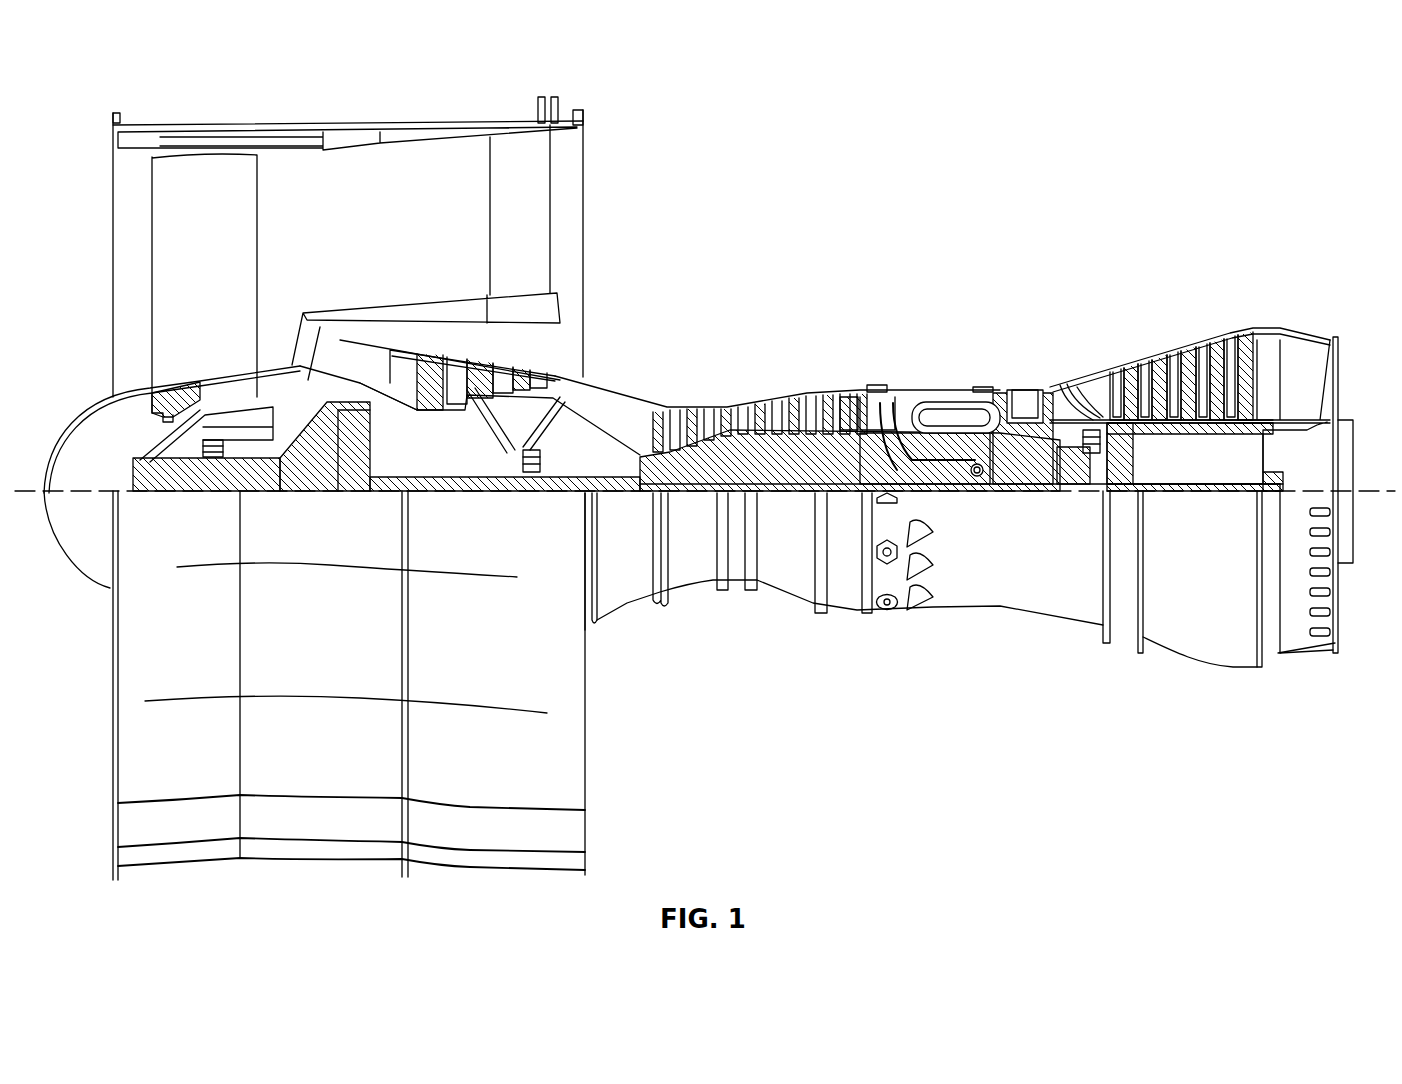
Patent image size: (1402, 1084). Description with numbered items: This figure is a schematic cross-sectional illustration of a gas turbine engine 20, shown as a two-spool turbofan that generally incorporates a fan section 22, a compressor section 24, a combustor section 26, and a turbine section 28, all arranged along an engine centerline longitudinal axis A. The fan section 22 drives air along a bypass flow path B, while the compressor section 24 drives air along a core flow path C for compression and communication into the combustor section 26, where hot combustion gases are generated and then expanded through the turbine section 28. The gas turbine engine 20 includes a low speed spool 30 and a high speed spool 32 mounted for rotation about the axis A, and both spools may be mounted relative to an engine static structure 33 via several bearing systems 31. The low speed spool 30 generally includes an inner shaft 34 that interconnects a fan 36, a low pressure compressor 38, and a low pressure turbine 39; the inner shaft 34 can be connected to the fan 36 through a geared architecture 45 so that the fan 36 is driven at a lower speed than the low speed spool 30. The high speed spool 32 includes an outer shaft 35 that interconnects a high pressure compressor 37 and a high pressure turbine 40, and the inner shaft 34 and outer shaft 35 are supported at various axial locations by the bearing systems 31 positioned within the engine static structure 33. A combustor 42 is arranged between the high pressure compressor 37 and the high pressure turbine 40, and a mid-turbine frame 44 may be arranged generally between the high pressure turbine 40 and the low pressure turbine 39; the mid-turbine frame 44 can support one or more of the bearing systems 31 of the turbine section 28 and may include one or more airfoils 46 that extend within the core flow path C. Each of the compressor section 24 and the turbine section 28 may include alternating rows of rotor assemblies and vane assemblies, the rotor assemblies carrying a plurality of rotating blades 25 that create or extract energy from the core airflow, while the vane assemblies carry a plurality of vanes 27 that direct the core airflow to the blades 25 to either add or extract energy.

The gas turbine engine 20 is at (1095, 172).
The fan section 22 is at (232, 105).
The compressor section 24 is at (647, 378).
The blades 25 is at (430, 380).
The combustor section 26 is at (920, 380).
The vanes 27 is at (455, 370).
The turbine section 28 is at (1137, 325).
The low speed spool 30 is at (806, 495).
The bearing systems 31 is at (212, 465).
The high speed spool 32 is at (878, 445).
The engine static structure 33 is at (846, 605).
The inner shaft 34 is at (607, 495).
The outer shaft 35 is at (988, 473).
The fan 36 is at (228, 255).
The high pressure compressor 37 is at (768, 455).
The low pressure compressor 38 is at (497, 375).
The low pressure turbine 39 is at (1215, 372).
The high pressure turbine 40 is at (1030, 395).
The combustor 42 is at (930, 422).
The mid-turbine frame 44 is at (1088, 382).
The geared architecture 45 is at (350, 453).
The airfoils 46 is at (1065, 408).
The engine centerline longitudinal axis A is at (1363, 493).
The bypass flow path B is at (438, 222).
The core flow path C is at (625, 417).